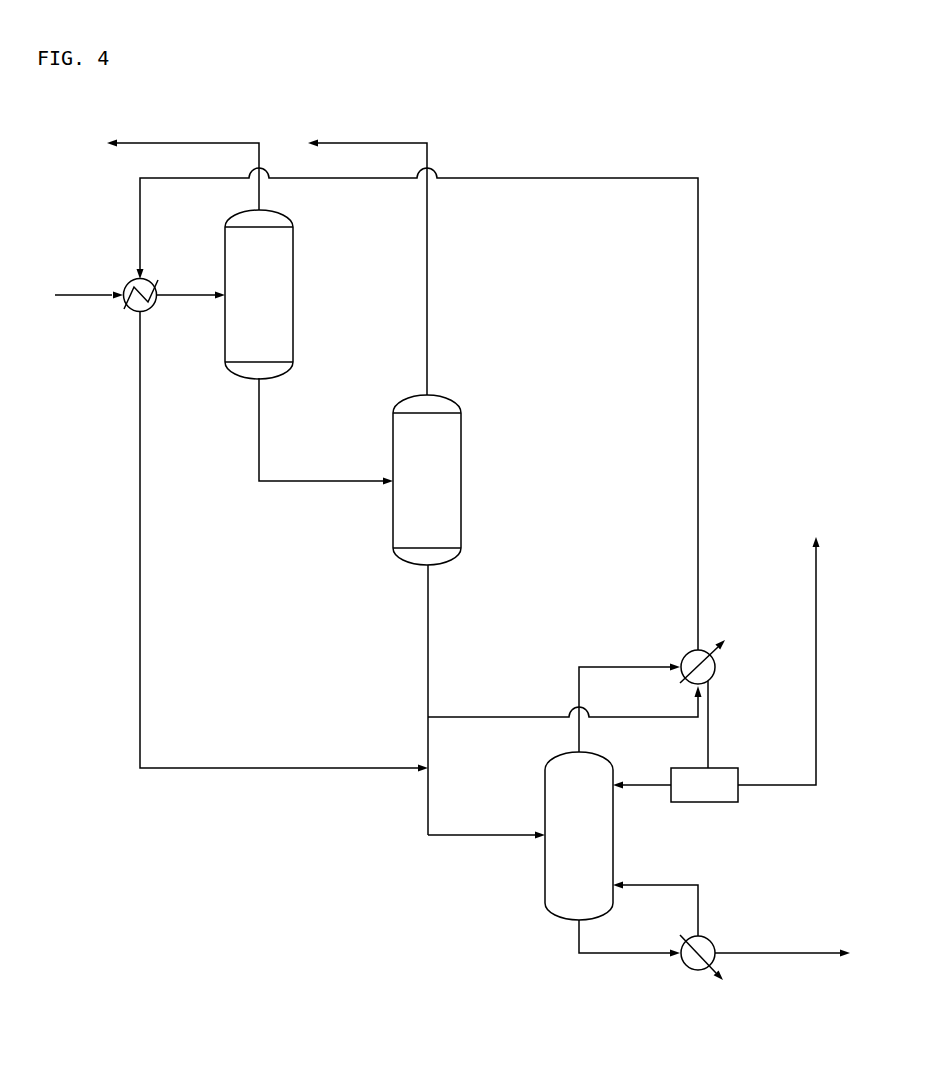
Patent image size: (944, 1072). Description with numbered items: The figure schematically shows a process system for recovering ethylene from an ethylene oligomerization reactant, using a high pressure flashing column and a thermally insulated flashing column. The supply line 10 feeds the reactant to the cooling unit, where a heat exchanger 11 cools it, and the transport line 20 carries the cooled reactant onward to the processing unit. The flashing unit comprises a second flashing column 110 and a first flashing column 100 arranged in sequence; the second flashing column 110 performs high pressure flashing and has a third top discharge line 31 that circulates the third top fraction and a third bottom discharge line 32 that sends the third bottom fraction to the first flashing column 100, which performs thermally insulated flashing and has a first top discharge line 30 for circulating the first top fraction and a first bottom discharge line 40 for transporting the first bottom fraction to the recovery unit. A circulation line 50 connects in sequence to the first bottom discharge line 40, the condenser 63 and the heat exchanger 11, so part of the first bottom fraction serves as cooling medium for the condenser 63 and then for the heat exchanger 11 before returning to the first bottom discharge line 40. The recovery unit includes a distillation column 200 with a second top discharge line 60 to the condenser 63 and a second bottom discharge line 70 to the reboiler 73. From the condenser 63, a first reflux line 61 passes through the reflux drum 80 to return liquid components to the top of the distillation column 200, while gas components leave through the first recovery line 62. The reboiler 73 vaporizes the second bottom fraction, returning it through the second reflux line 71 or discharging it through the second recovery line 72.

The supply line 10 is at (89, 286).
The heat exchanger 11 is at (128, 319).
The transport line 20 is at (191, 286).
The first top discharge line 30 is at (367, 258).
The third top discharge line 31 is at (183, 165).
The third bottom discharge line 32 is at (326, 431).
The first bottom discharge line 40 is at (486, 825).
The circulation line 50 is at (418, 399).
The second top discharge line 60 is at (629, 697).
The first reflux line 61 is at (642, 775).
The first recovery line 62 is at (779, 661).
The condenser 63 is at (716, 665).
The second bottom discharge line 70 is at (629, 938).
The second reflux line 71 is at (655, 899).
The second recovery line 72 is at (782, 943).
The reboiler 73 is at (698, 972).
The reflux drum 80 is at (704, 785).
The first flashing column 100 is at (427, 480).
The second flashing column 110 is at (259, 294).
The distillation column 200 is at (579, 836).